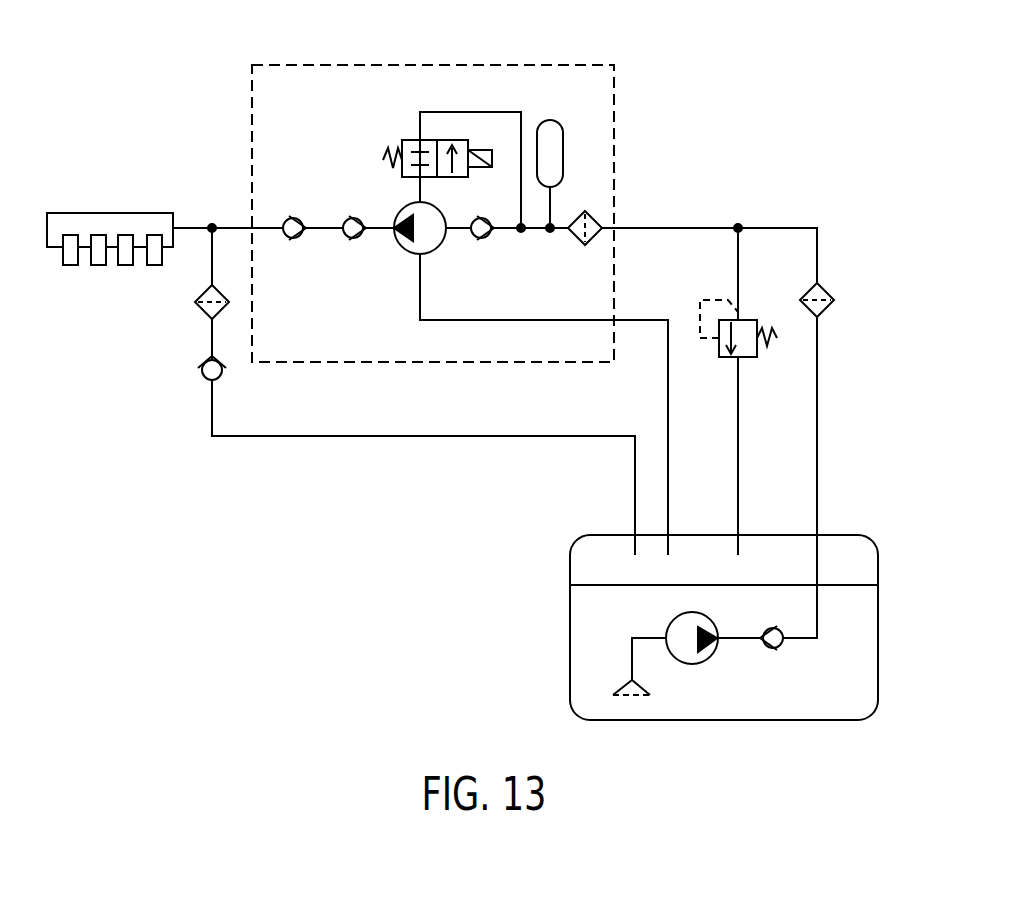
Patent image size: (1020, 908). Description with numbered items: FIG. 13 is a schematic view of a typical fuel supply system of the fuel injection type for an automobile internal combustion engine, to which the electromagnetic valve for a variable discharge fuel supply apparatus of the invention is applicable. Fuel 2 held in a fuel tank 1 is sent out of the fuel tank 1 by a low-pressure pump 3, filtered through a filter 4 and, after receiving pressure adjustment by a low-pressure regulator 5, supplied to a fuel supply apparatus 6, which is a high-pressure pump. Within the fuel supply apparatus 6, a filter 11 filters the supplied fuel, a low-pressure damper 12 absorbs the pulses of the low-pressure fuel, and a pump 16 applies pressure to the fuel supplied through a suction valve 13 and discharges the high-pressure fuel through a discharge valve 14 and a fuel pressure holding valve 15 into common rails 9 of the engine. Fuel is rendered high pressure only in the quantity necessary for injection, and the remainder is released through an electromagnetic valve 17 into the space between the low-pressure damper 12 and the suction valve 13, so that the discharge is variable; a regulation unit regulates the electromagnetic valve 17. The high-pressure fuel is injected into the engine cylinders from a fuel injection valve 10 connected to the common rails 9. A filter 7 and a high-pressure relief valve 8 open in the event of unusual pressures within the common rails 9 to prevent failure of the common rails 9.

The fuel tank 1 is at (878, 650).
The fuel 2 is at (872, 602).
The low-pressure pump 3 is at (716, 650).
The filter 4 is at (831, 297).
The low-pressure regulator 5 is at (758, 356).
The fuel supply apparatus 6 is at (597, 62).
The filter 7 is at (199, 310).
The high-pressure relief valve 8 is at (204, 374).
The common rails 9 is at (125, 213).
The fuel injection valve 10 is at (70, 266).
The filter 11 is at (600, 222).
The low-pressure damper 12 is at (563, 140).
The suction valve 13 is at (485, 242).
The discharge valve 14 is at (356, 240).
The fuel pressure holding valve 15 is at (296, 240).
The pump 16 is at (400, 212).
The electromagnetic valve 17 is at (437, 111).